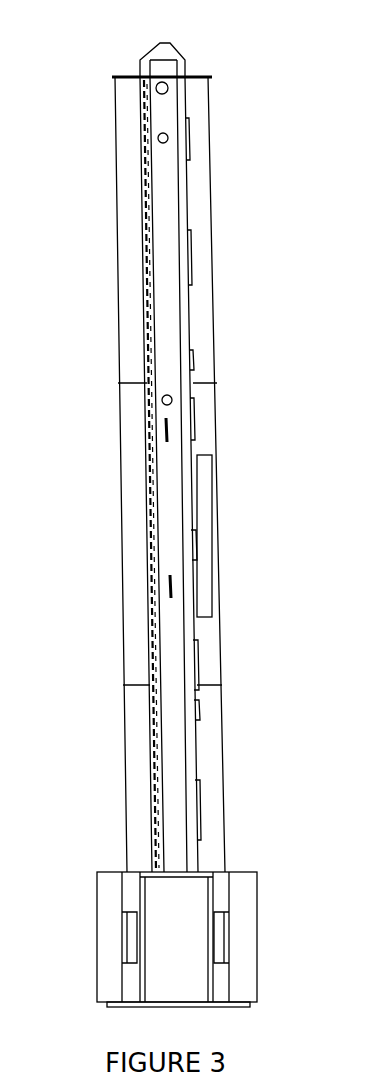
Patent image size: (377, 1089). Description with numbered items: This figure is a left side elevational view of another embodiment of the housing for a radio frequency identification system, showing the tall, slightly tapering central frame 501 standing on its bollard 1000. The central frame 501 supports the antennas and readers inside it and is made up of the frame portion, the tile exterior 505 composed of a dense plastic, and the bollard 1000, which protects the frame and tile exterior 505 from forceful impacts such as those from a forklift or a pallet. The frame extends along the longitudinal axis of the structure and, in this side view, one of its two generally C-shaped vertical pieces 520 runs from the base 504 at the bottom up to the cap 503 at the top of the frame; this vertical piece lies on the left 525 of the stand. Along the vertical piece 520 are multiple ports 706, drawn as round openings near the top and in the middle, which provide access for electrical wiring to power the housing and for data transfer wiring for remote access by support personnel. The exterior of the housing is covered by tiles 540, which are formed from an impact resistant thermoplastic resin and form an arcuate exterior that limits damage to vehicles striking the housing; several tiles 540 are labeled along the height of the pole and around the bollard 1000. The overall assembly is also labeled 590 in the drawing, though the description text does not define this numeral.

The central frame 501 is at (168, 44).
The cap 503 is at (182, 68).
The ports 706 is at (168, 92).
The left 525 is at (172, 278).
The tile exterior 505 is at (200, 350).
The tiles 540 is at (118, 258).
The pole 590 is at (124, 522).
The vertical piece 520 is at (178, 797).
The bollard 1000 is at (245, 960).
The base 504 is at (243, 1004).